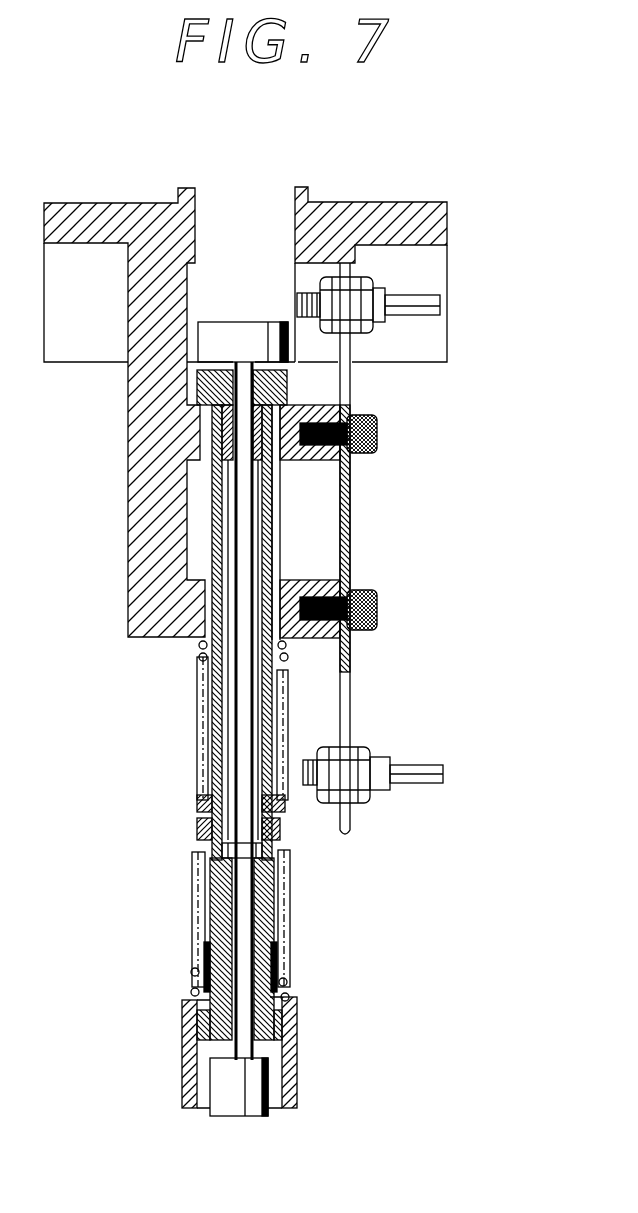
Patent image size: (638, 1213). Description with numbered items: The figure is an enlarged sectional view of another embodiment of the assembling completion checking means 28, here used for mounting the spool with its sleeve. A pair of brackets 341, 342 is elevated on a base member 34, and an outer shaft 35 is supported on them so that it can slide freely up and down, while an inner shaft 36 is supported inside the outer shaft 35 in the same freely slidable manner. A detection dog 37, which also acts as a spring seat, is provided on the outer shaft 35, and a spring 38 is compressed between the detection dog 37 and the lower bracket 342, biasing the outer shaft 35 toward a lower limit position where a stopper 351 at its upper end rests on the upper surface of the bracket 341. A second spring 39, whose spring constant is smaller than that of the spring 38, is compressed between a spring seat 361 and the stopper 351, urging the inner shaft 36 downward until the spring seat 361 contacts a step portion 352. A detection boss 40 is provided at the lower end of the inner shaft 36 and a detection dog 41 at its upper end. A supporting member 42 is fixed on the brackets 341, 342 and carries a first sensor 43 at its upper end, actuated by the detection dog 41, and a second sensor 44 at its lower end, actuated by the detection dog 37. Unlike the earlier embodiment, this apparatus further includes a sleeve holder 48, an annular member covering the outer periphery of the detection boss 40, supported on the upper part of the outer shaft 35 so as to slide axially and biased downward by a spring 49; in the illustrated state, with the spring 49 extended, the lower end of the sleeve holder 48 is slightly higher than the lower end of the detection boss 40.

The assembling completion checking means 28 is at (417, 503).
The base member 34 is at (128, 522).
The upper bracket 341 is at (300, 455).
The lower bracket 342 is at (300, 580).
The outer shaft 35 is at (213, 716).
The stopper 351 is at (196, 372).
The step portion 352 is at (280, 870).
The inner shaft 36 is at (238, 672).
The spring seat 361 is at (205, 875).
The detection dog 37 is at (200, 815).
The spring 38 is at (200, 774).
The spring 39 is at (258, 840).
The detection boss 40 is at (262, 1085).
The detection dog 41 is at (232, 322).
The supporting member 42 is at (345, 690).
The first sensor 43 is at (300, 295).
The second sensor 44 is at (312, 762).
The sleeve holder 48 is at (298, 1008).
The spring 49 is at (285, 975).